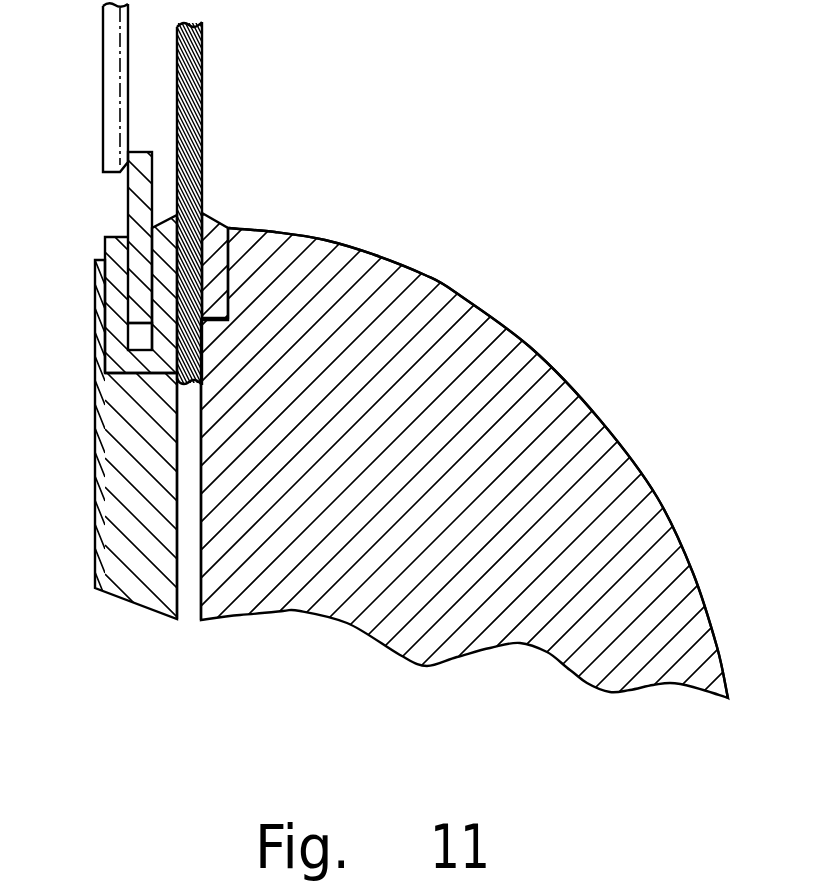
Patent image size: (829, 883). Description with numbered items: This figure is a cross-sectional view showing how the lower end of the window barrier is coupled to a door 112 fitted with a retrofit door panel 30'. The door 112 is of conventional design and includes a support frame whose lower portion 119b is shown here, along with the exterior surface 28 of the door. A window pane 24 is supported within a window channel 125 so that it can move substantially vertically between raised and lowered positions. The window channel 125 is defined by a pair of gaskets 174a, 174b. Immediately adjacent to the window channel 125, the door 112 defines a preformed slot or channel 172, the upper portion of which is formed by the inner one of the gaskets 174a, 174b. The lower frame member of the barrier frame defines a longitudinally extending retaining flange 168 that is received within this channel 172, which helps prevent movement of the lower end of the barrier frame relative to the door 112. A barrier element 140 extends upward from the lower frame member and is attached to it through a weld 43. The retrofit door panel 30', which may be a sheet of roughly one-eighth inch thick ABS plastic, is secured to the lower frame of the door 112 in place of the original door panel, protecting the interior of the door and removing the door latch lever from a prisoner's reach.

The exterior surface 28 is at (658, 496).
The lower portion of support frame 119b is at (482, 263).
The door 112 is at (597, 260).
The window pane 24 is at (202, 72).
The barrier element 140 is at (102, 96).
The weld 43 is at (123, 176).
The retaining flange 168 is at (117, 278).
The channel 172 is at (117, 338).
The gasket 174a is at (163, 213).
The gasket 174b is at (203, 213).
The retrofit door panel 30' is at (103, 428).
The window channel 125 is at (190, 437).